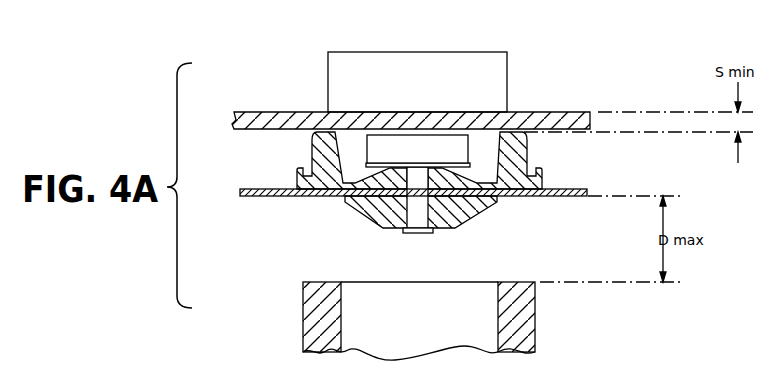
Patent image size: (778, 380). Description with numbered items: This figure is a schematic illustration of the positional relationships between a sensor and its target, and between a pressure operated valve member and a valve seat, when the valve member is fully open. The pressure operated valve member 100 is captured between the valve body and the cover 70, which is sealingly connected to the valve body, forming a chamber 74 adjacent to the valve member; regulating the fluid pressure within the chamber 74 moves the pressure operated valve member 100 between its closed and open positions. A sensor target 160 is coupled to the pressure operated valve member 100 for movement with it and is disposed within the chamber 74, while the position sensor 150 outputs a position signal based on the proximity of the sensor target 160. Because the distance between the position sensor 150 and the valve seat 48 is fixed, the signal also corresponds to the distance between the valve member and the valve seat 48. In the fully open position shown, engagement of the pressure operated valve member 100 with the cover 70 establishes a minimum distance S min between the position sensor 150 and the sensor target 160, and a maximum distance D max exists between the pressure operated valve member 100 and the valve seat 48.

The valve seat 48 is at (330, 282).
The cover 70 is at (253, 112).
The chamber 74 is at (268, 173).
The pressure operated valve member 100 is at (523, 143).
The position sensor 150 is at (507, 65).
The sensor target 160 is at (468, 143).